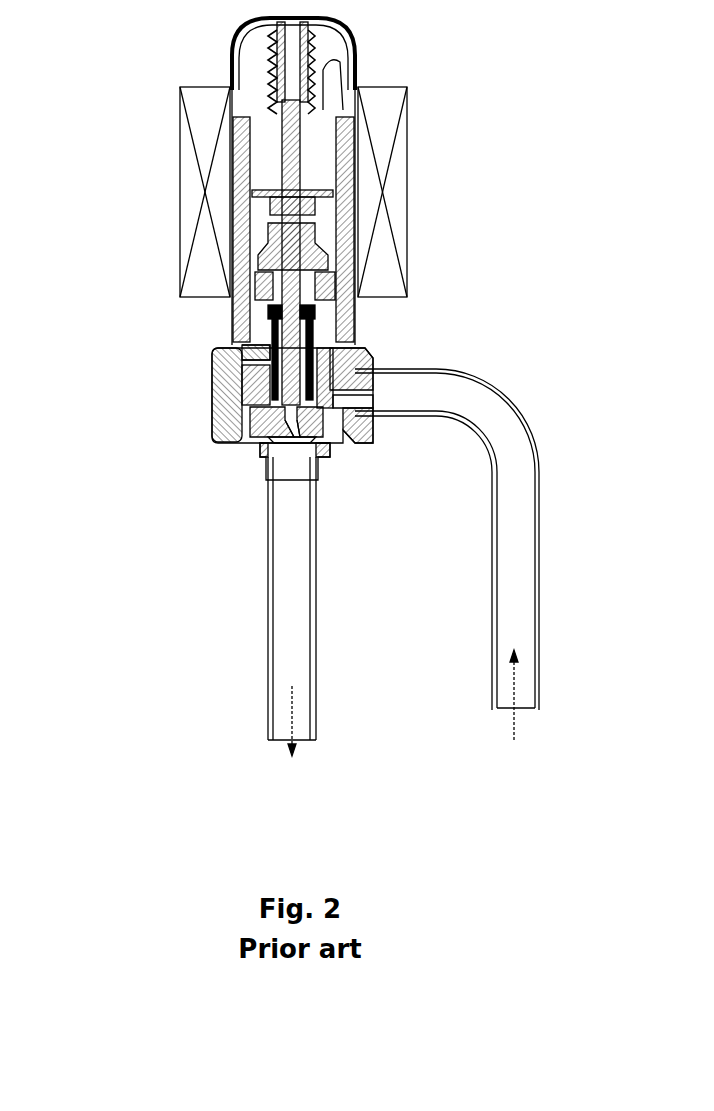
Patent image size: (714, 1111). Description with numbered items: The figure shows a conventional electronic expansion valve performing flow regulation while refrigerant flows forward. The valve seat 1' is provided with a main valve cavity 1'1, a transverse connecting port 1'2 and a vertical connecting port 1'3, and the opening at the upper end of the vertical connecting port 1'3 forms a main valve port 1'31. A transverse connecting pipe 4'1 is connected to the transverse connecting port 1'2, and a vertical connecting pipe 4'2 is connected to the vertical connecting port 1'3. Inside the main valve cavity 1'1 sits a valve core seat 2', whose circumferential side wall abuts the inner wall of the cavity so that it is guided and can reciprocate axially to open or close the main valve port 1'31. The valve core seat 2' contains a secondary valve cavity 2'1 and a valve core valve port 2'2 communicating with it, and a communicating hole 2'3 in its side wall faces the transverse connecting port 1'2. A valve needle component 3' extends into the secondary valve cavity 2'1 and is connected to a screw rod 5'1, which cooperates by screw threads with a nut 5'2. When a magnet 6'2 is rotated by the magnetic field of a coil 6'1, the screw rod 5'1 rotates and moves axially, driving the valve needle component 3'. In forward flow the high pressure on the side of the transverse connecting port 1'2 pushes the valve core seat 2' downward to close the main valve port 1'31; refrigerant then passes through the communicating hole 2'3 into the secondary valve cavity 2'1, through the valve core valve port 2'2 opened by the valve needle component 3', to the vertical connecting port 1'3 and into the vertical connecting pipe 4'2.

The coil 6'1 is at (227, 192).
The magnet 6'2 is at (201, 181).
The screw rod 5'1 is at (192, 252).
The nut 5'2 is at (196, 161).
The valve needle component 3' is at (194, 333).
The valve seat 1' is at (250, 393).
The main valve cavity 1'1 is at (180, 395).
The main valve port 1'31 is at (229, 466).
The vertical connecting port 1'3 is at (239, 486).
The vertical connecting pipe 4'2 is at (233, 606).
The secondary valve cavity 2'1 is at (379, 345).
The valve core seat 2' is at (401, 361).
The communicating hole 2'3 is at (380, 393).
The transverse connecting port 1'2 is at (395, 453).
The valve core valve port 2'2 is at (365, 480).
The transverse connecting pipe 4'1 is at (491, 554).